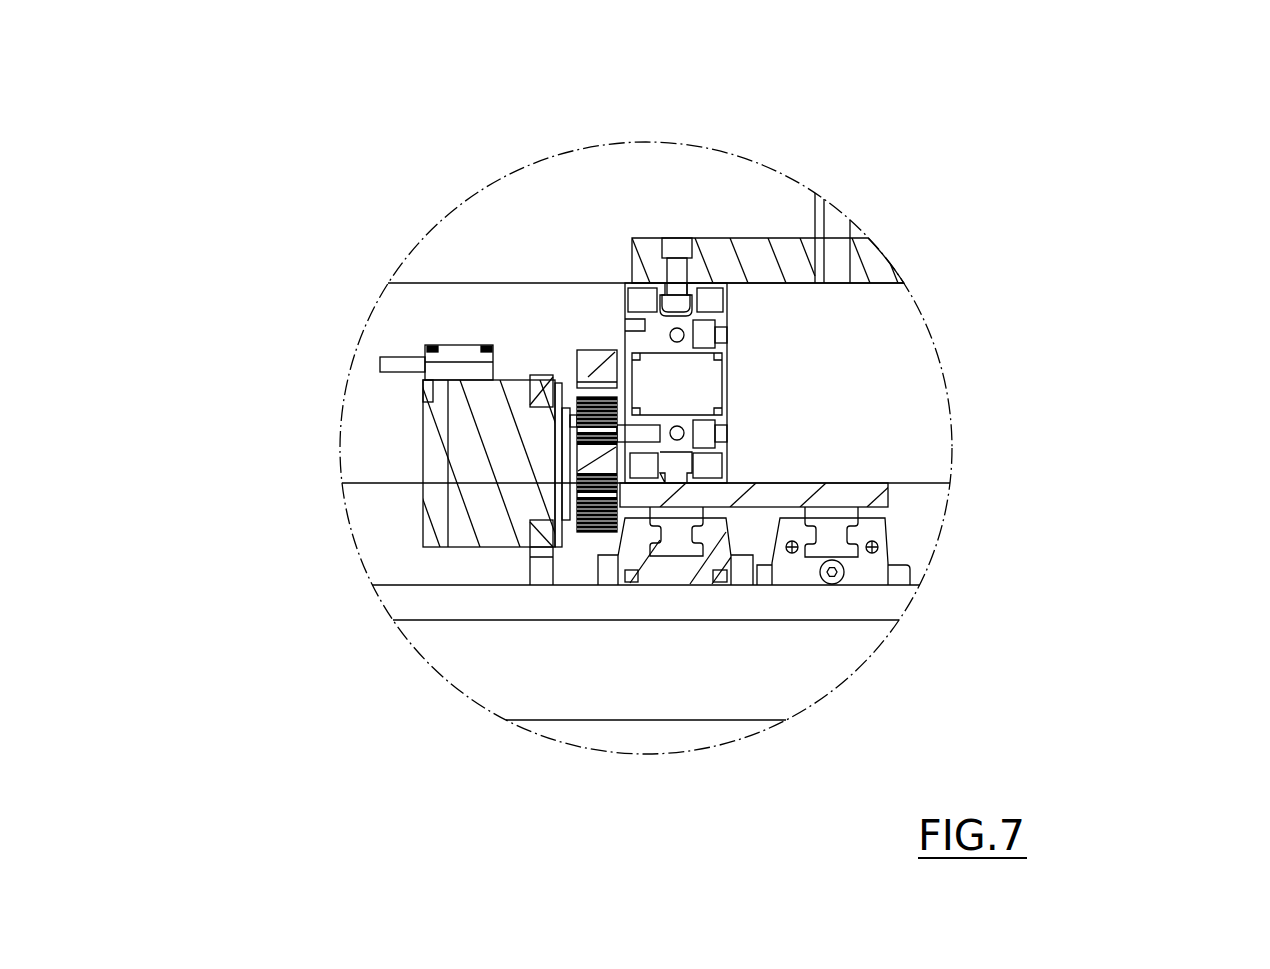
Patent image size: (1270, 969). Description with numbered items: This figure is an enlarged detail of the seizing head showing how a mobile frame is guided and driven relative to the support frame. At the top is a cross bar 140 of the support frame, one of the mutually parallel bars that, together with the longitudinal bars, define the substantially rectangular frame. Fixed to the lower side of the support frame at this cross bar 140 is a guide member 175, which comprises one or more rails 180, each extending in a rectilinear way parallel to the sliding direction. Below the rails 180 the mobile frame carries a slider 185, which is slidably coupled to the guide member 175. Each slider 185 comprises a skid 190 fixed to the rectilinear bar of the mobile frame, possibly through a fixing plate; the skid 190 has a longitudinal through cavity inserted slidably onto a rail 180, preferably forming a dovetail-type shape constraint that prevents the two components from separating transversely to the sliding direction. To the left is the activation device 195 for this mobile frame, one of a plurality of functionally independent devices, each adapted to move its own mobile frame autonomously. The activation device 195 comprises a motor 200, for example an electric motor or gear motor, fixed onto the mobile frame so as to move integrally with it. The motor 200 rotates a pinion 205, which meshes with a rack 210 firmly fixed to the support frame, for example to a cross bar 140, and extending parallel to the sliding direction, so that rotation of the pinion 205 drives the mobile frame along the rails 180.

The cross bar 140 is at (660, 300).
The guide member 175 is at (900, 490).
The rail 180 is at (676, 522).
The slider 185 is at (918, 573).
The skid 190 is at (868, 568).
The activation device 195 is at (390, 422).
The motor 200 is at (472, 467).
The pinion 205 is at (577, 528).
The rack 210 is at (598, 360).